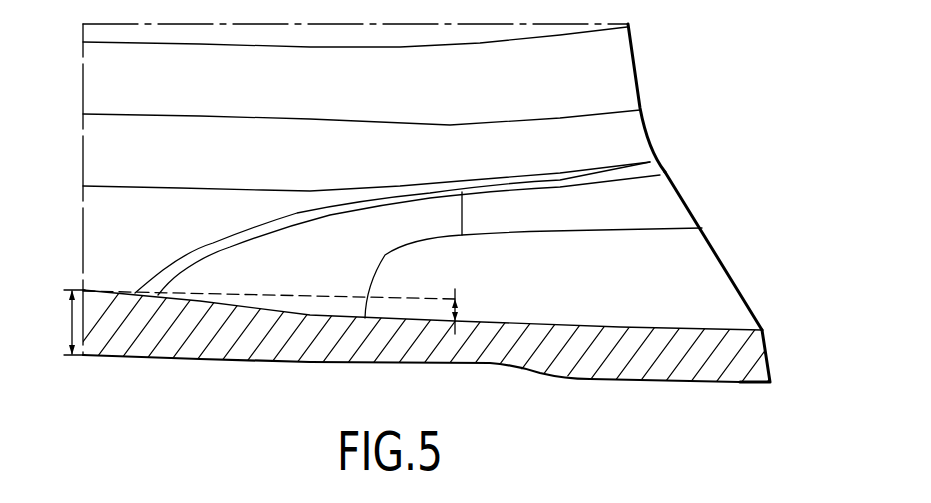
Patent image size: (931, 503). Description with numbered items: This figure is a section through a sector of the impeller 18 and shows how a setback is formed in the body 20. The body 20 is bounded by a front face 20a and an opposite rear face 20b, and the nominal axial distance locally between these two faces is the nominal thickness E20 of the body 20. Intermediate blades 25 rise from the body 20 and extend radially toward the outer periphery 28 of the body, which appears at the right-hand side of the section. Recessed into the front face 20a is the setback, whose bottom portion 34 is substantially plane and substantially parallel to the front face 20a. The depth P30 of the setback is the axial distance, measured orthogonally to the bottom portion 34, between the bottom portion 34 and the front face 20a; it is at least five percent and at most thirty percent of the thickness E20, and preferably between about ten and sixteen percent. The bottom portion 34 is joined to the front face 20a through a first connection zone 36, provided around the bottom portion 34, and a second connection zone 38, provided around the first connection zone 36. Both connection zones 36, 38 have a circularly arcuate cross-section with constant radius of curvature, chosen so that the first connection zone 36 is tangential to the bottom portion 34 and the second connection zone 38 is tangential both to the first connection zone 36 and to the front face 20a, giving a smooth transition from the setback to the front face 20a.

The impeller 18 is at (696, 111).
The body 20 is at (98, 213).
The front face 20a is at (126, 268).
The rear face 20b is at (163, 360).
The nominal thickness of the body E20 is at (55, 322).
The intermediate blade 25 is at (98, 71).
The outer periphery 28 is at (747, 292).
The bottom portion 34 is at (582, 297).
The first connection zone 36 is at (297, 283).
The second connection zone 38 is at (197, 263).
The depth of the setback P30 is at (458, 311).